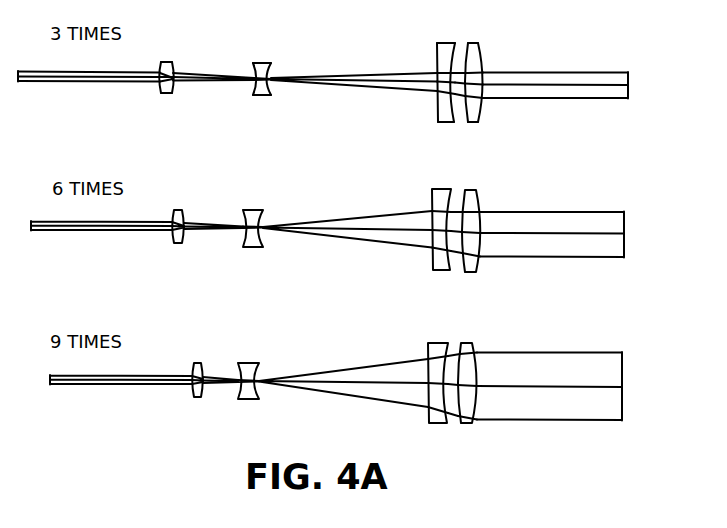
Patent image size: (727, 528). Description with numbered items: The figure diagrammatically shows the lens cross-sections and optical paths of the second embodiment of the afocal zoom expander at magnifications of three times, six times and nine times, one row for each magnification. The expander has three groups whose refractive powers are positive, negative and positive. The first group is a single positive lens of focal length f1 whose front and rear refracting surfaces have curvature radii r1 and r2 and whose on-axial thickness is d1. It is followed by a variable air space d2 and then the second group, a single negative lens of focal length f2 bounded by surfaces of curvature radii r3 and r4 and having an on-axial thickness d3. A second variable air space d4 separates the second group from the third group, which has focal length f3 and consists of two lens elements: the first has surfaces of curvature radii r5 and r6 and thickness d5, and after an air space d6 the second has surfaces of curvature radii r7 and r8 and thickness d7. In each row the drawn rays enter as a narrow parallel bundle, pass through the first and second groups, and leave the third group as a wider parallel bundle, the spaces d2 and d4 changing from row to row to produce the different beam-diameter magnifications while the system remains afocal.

The focal length of the first lens group f1 is at (169, 69).
The focal length of the second lens group f2 is at (266, 76).
The focal length of the third lens group f3 is at (467, 80).
The on-axial thickness of the first lens d1 is at (169, 82).
The air space between the first and second lens groups d2 is at (213, 66).
The on-axial thickness of the second lens d3 is at (266, 90).
The air space between the second and third lens groups d4 is at (354, 72).
The on-axial thickness of the first lens of the third group d5 is at (426, 99).
The air space within the third lens group d6 is at (468, 80).
The on-axial thickness of the second lens of the third group d7 is at (500, 99).
The curvature radius of the first refracting surface r1 is at (160, 87).
The curvature radius of the second refracting surface r2 is at (172, 87).
The curvature radius of the third refracting surface r3 is at (256, 92).
The curvature radius of the fourth refracting surface r4 is at (268, 93).
The curvature radius of the fifth refracting surface r5 is at (437, 109).
The curvature radius of the sixth refracting surface r6 is at (455, 118).
The curvature radius of the seventh refracting surface r7 is at (465, 118).
The curvature radius of the eighth refracting surface r8 is at (485, 112).